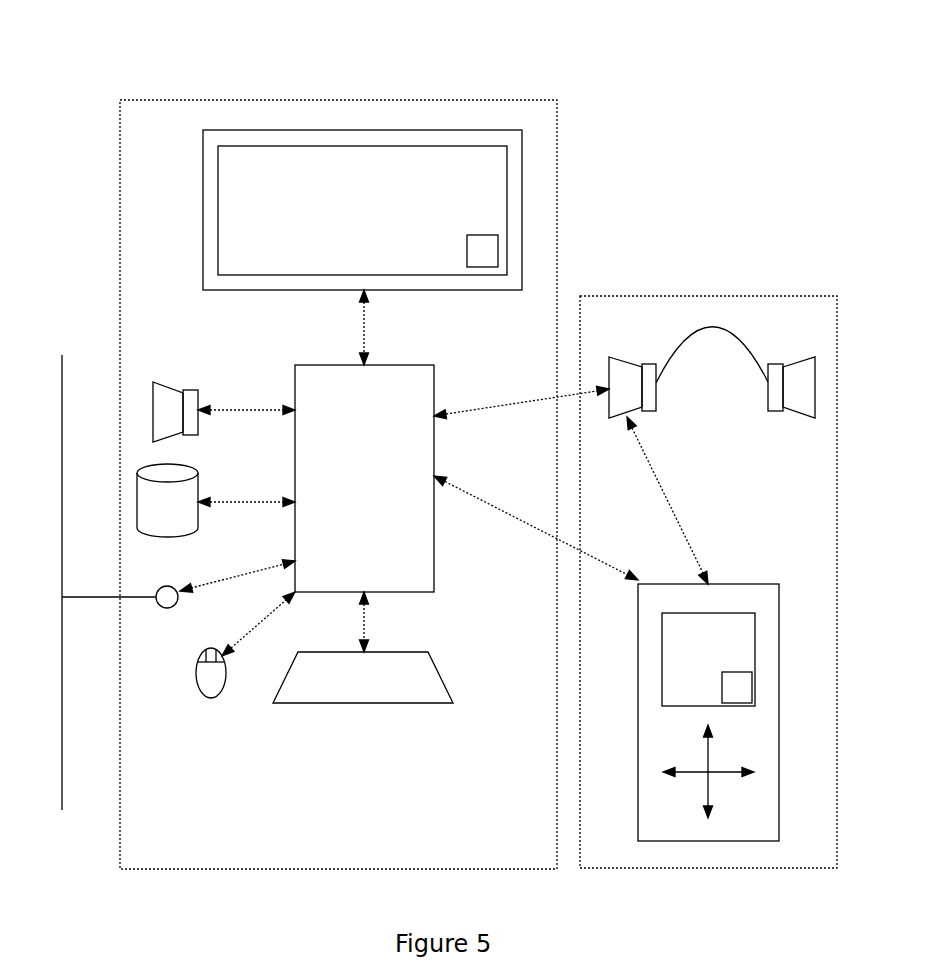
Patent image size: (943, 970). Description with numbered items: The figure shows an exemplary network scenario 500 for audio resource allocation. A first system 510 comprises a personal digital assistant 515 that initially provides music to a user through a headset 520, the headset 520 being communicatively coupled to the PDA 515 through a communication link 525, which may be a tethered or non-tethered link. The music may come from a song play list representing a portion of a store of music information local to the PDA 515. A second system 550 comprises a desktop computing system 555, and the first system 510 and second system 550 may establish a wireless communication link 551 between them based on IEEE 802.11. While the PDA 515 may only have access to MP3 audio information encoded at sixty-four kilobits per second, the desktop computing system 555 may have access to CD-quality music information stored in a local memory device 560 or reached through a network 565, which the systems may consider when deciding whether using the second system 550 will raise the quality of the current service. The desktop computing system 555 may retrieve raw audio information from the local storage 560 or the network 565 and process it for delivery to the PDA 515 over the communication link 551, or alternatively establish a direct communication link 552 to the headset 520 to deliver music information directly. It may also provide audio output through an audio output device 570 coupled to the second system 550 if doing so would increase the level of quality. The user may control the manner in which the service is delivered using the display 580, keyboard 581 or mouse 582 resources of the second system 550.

The network scenario 500 is at (108, 66).
The second system 550 is at (467, 99).
The first system 510 is at (777, 296).
The display 580 is at (523, 241).
The desktop computing system 555 is at (425, 365).
The direct communication link 552 is at (500, 405).
The wireless communication link 551 is at (508, 510).
The audio output device 570 is at (161, 384).
The local memory device 560 is at (199, 473).
The network 565 is at (168, 608).
The mouse 582 is at (215, 699).
The keyboard 581 is at (433, 703).
The communication link 525 is at (652, 457).
The headset 520 is at (797, 410).
The personal digital assistant 515 is at (740, 584).